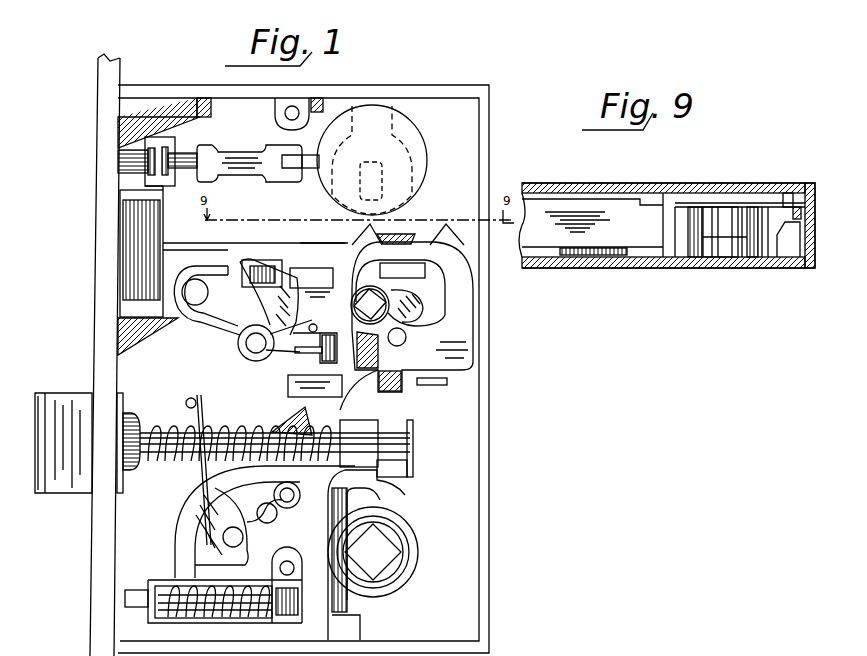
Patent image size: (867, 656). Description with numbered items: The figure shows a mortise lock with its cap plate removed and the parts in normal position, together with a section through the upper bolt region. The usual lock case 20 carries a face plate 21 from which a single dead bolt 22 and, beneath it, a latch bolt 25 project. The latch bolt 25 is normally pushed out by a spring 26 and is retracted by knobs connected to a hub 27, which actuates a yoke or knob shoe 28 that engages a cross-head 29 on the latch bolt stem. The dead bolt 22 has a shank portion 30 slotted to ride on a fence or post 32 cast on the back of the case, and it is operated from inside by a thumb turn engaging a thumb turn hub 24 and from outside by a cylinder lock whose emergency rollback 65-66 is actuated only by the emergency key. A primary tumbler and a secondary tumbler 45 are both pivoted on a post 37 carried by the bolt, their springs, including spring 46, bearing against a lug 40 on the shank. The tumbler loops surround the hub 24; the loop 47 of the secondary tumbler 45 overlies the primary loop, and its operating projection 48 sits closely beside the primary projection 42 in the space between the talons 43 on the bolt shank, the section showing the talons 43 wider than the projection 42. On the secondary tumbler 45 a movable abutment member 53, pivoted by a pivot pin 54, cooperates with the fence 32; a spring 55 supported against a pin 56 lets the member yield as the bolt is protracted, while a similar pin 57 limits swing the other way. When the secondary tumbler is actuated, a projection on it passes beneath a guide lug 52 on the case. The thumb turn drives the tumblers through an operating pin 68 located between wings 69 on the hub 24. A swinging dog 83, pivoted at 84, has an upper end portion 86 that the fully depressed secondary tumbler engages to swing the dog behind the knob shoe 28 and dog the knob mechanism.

In FIG. 1, the mortise lock case 20 is at (470, 472).
In FIG. 1, the face plate 21 is at (97, 552).
In FIG. 1, the dead bolt 22 is at (136, 253).
In FIG. 1, the thumb turn hub 24 is at (386, 294).
In FIG. 1, the latch bolt 25 is at (62, 483).
In FIG. 1, the spring 26 is at (160, 425).
In FIG. 1, the hub 27 is at (350, 530).
In FIG. 1, the yoke or knob shoe 28 is at (410, 576).
In FIG. 1, the cross-head 29 is at (413, 424).
In FIG. 1, the shank portion 30 is at (196, 243).
In FIG. 9, the shank portion 30 is at (600, 218).
In FIG. 1, the fence or post 32 is at (263, 270).
In FIG. 1, the post 37 is at (190, 290).
In FIG. 1, the lug 40 is at (302, 355).
In FIG. 9, the operating projection 42 is at (727, 213).
In FIG. 1, the talons 43 is at (437, 236).
In FIG. 9, the talons 43 is at (693, 240).
In FIG. 1, the secondary tumbler 45 is at (316, 292).
In FIG. 1, the spring 46 is at (190, 323).
In FIG. 1, the loop 47 is at (460, 328).
In FIG. 1, the operating projection 48 is at (400, 242).
In FIG. 9, the operating projection 48 is at (720, 250).
In FIG. 1, the guide lug 52 is at (448, 383).
In FIG. 1, the movable abutment member 53 is at (292, 290).
In FIG. 9, the movable abutment member 53 is at (590, 256).
In FIG. 1, the pivot pin 54 is at (250, 343).
In FIG. 1, the spring 55 is at (258, 360).
In FIG. 1, the pin 56 is at (317, 328).
In FIG. 1, the pin 57 is at (246, 266).
In FIG. 1, the emergency rollback 65-66 is at (378, 125).
In FIG. 1, the operating pin or projection 68 is at (405, 380).
In FIG. 1, the wings 69 is at (393, 317).
In FIG. 1, the swinging dog 83 is at (275, 520).
In FIG. 1, the pivot 84 is at (235, 547).
In FIG. 1, the upper end portion 86 is at (290, 420).